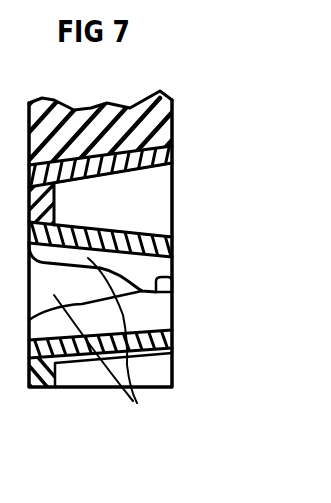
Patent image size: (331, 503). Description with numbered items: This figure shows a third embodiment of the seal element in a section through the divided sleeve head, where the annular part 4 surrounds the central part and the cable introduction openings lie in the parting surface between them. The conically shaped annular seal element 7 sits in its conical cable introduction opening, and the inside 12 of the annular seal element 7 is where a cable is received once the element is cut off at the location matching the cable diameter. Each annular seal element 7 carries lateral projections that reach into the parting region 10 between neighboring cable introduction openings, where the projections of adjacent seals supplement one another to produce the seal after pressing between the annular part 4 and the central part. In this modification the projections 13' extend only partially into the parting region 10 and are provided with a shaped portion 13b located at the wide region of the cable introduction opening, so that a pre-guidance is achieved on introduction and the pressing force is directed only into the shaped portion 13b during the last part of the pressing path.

The annular part 4 is at (160, 131).
The annular seal element 7 is at (160, 166).
The inside of annular seal element 12 is at (165, 204).
The shaped portion 13b is at (172, 284).
The parting region 10 is at (70, 363).
The projection 13' is at (103, 345).